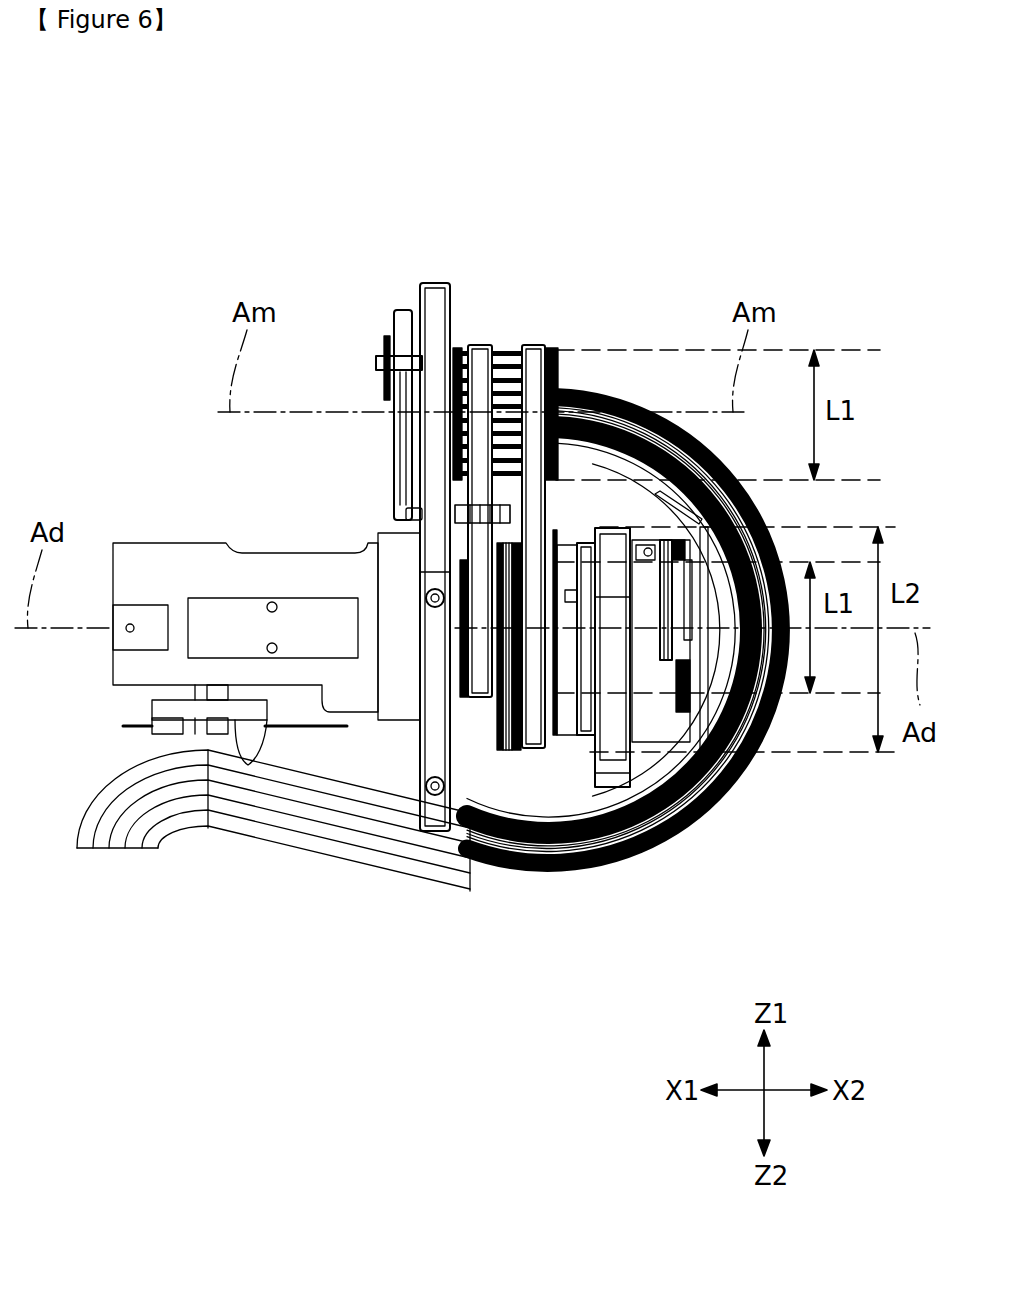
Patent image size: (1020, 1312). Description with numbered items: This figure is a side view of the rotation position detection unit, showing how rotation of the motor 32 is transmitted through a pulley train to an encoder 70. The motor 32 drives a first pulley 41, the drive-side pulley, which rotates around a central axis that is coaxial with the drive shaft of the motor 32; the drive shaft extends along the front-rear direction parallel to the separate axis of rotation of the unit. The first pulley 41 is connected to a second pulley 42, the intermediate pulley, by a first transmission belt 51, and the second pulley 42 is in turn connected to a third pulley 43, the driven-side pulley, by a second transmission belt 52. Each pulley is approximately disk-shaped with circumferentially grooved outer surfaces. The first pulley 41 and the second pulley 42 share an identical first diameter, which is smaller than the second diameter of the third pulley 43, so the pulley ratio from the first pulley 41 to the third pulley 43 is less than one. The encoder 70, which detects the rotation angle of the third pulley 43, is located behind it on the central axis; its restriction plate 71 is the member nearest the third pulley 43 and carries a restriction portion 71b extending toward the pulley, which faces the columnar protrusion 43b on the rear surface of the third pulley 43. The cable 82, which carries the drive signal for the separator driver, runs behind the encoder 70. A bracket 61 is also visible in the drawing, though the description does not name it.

The motor 32 is at (198, 530).
The first pulley 41 is at (462, 695).
The second pulley 42 is at (558, 355).
The third pulley 43 is at (504, 752).
The protrusion 43b is at (566, 752).
The first transmission belt 51 is at (481, 350).
The second transmission belt 52 is at (534, 350).
The bracket 61 is at (397, 318).
The encoder 70 is at (647, 782).
The restriction plate 71 is at (590, 722).
The restriction portion 71b is at (573, 600).
The cable 82 is at (722, 782).